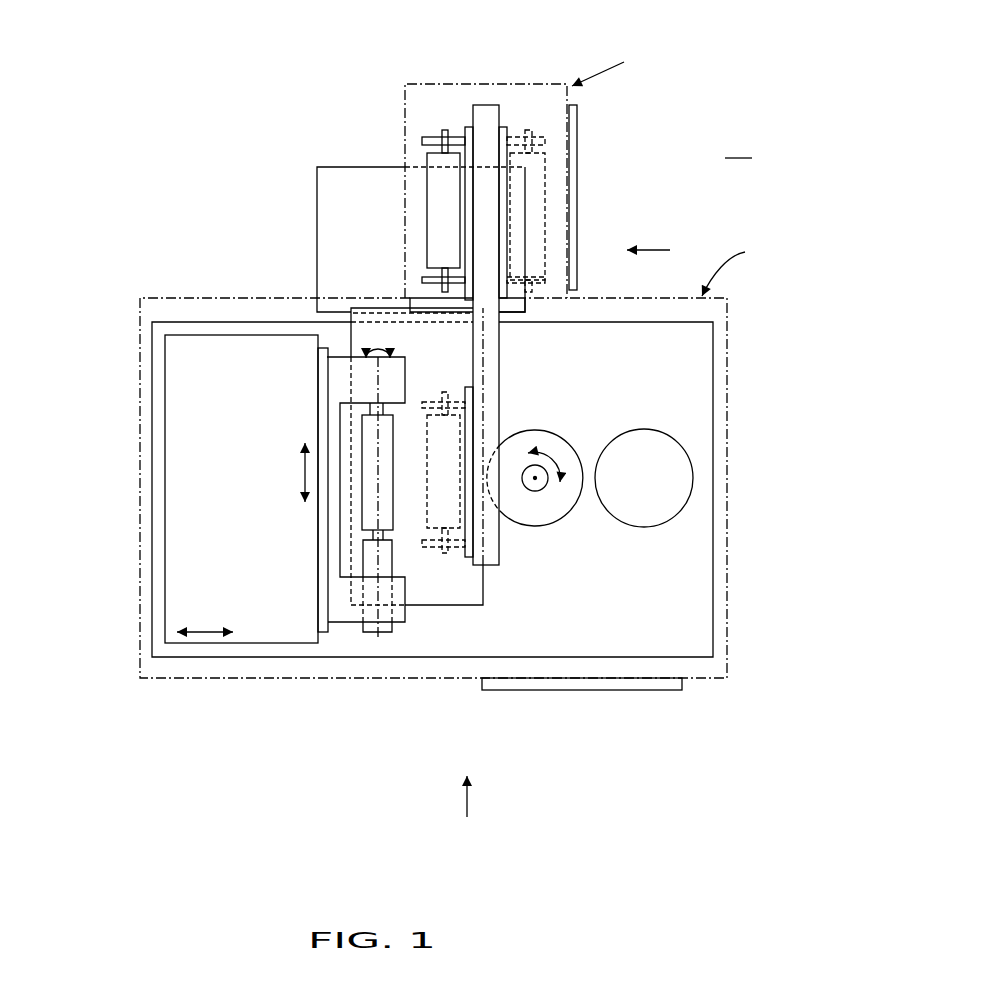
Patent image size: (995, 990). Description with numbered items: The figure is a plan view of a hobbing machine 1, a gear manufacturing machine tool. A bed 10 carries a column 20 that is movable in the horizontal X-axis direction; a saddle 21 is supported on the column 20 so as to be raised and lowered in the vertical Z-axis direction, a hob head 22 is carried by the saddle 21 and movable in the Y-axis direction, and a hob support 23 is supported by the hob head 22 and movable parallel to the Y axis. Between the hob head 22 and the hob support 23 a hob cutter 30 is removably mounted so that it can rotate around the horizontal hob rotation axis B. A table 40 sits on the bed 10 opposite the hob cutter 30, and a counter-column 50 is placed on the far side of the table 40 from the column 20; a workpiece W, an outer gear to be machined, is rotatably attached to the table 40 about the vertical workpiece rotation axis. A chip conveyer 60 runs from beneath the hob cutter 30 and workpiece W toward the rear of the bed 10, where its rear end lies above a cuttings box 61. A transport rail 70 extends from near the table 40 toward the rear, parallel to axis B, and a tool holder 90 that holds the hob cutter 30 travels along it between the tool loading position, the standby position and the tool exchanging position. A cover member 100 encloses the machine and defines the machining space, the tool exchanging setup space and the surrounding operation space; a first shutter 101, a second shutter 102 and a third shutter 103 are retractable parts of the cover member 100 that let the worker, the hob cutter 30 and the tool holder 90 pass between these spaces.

The hobbing machine 1 is at (724, 74).
The bed 10 is at (715, 388).
The column 20 is at (165, 360).
The saddle 21 is at (332, 634).
The hob head 22 is at (350, 623).
The hob support 23 is at (388, 634).
The hob cutter 30 is at (428, 190).
The table 40 is at (565, 518).
The counter-column 50 is at (690, 511).
The workpiece W is at (535, 491).
The chip conveyer 60 is at (351, 336).
The cuttings box 61 is at (317, 190).
The transport rail 70 is at (487, 104).
The tool holder 90 is at (463, 128).
The cover member 100 is at (417, 83).
The first shutter 101 is at (659, 692).
The second shutter 102 is at (418, 298).
The third shutter 103 is at (578, 132).